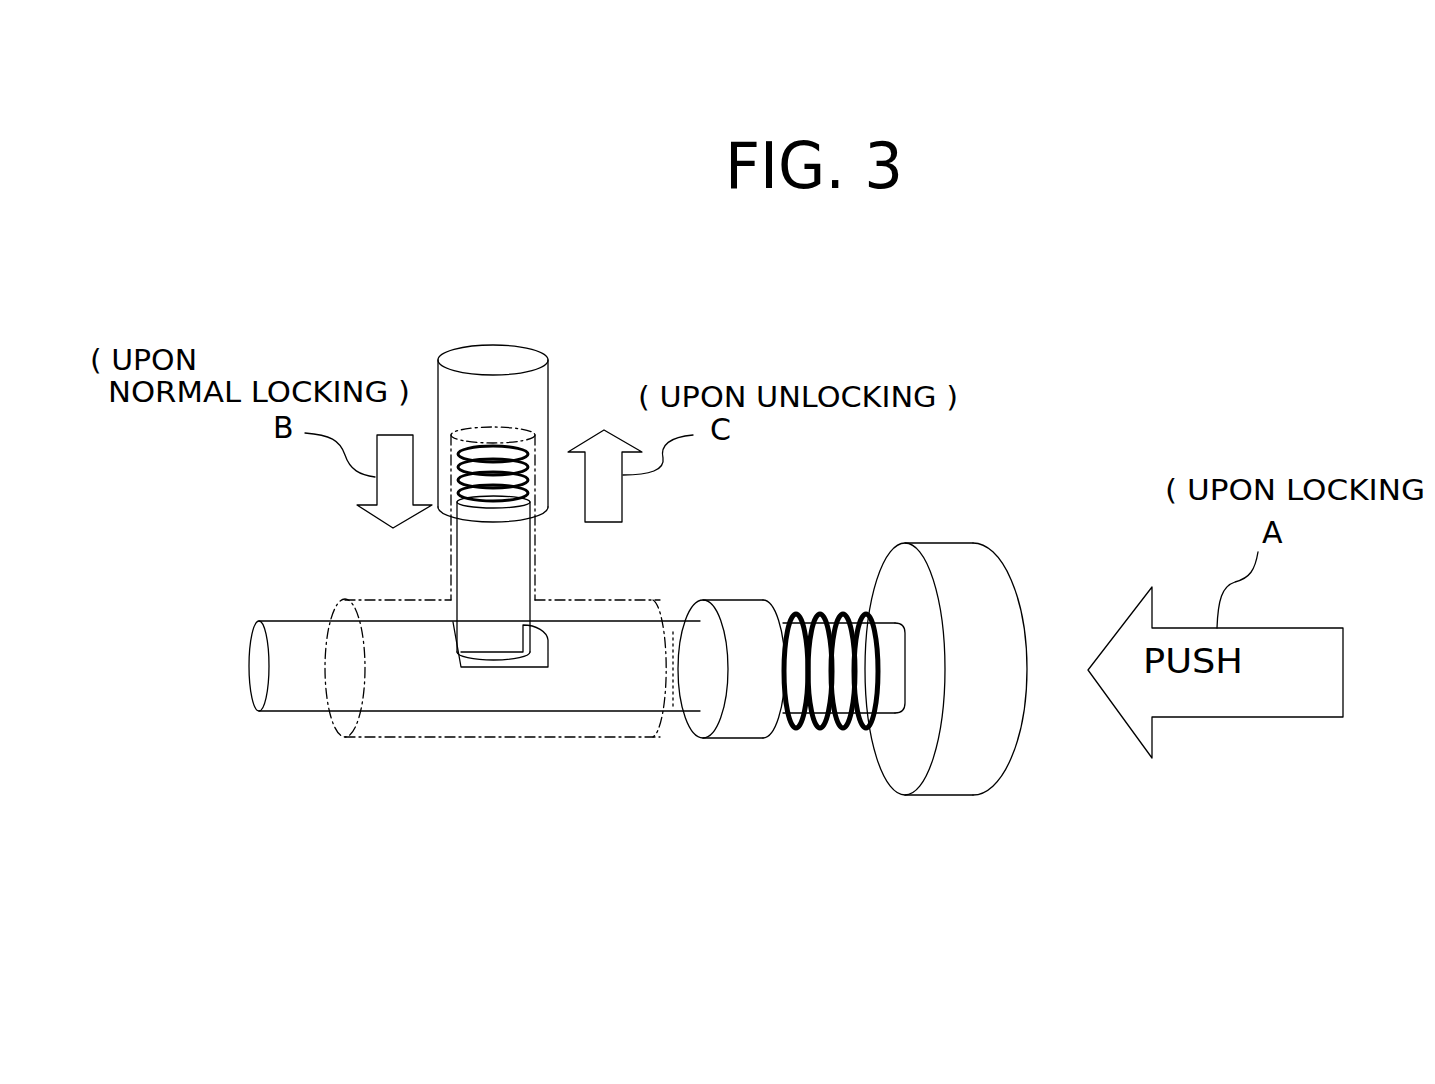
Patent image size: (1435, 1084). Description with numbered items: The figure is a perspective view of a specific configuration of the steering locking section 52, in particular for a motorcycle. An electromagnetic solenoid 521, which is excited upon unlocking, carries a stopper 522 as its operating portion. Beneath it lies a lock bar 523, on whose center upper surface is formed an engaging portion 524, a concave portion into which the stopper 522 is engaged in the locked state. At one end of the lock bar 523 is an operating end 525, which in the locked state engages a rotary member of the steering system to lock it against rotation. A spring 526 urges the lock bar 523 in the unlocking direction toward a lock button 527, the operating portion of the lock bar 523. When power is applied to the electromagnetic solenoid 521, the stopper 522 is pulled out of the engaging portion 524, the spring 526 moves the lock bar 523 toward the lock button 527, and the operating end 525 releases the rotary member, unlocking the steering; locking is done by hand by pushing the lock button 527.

The steering locking section 52 is at (815, 480).
The electromagnetic solenoid 521 is at (537, 404).
The stopper 522 is at (503, 567).
The lock bar 523 is at (440, 737).
The engaging portion 524 is at (488, 668).
The operating end 525 is at (263, 677).
The spring 526 is at (842, 740).
The lock button 527 is at (934, 560).